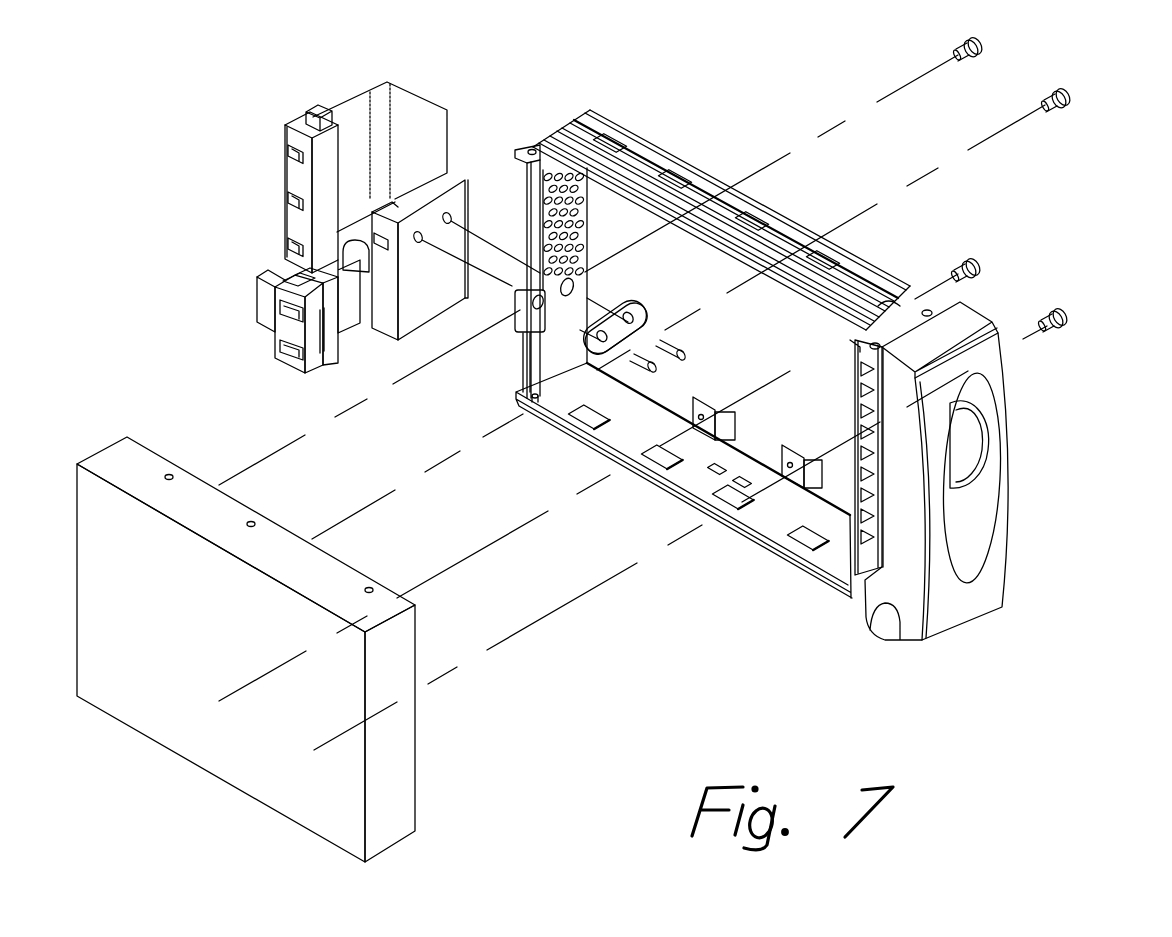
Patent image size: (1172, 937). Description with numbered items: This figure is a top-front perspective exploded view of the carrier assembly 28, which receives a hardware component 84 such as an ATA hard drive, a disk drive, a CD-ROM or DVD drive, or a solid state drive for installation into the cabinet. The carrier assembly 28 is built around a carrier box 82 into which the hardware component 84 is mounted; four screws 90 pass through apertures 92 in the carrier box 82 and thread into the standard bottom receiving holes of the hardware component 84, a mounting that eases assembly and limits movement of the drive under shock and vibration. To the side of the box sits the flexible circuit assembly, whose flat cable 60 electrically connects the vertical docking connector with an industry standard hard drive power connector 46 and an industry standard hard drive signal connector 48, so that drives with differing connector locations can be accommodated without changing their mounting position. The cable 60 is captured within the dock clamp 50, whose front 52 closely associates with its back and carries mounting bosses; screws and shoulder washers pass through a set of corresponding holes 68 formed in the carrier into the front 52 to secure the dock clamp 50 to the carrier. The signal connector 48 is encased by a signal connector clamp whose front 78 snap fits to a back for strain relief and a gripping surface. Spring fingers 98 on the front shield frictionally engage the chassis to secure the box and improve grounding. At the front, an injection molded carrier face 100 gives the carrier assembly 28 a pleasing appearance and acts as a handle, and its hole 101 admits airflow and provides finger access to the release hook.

The carrier assembly 28 is at (694, 126).
The hard drive power connector 46 is at (266, 306).
The hard drive signal connector 48 is at (288, 153).
The dock clamp 50 is at (472, 142).
The front of dock clamp 52 is at (446, 286).
The flat cable 60 is at (413, 147).
The holes 68 is at (566, 296).
The front of signal connector clamp 78 is at (297, 180).
The carrier box 82 is at (616, 235).
The hardware component 84 is at (203, 665).
The screws 90 is at (966, 38).
The apertures 92 is at (697, 398).
The spring fingers 98 is at (860, 542).
The carrier face 100 is at (957, 608).
The hole 101 is at (988, 434).